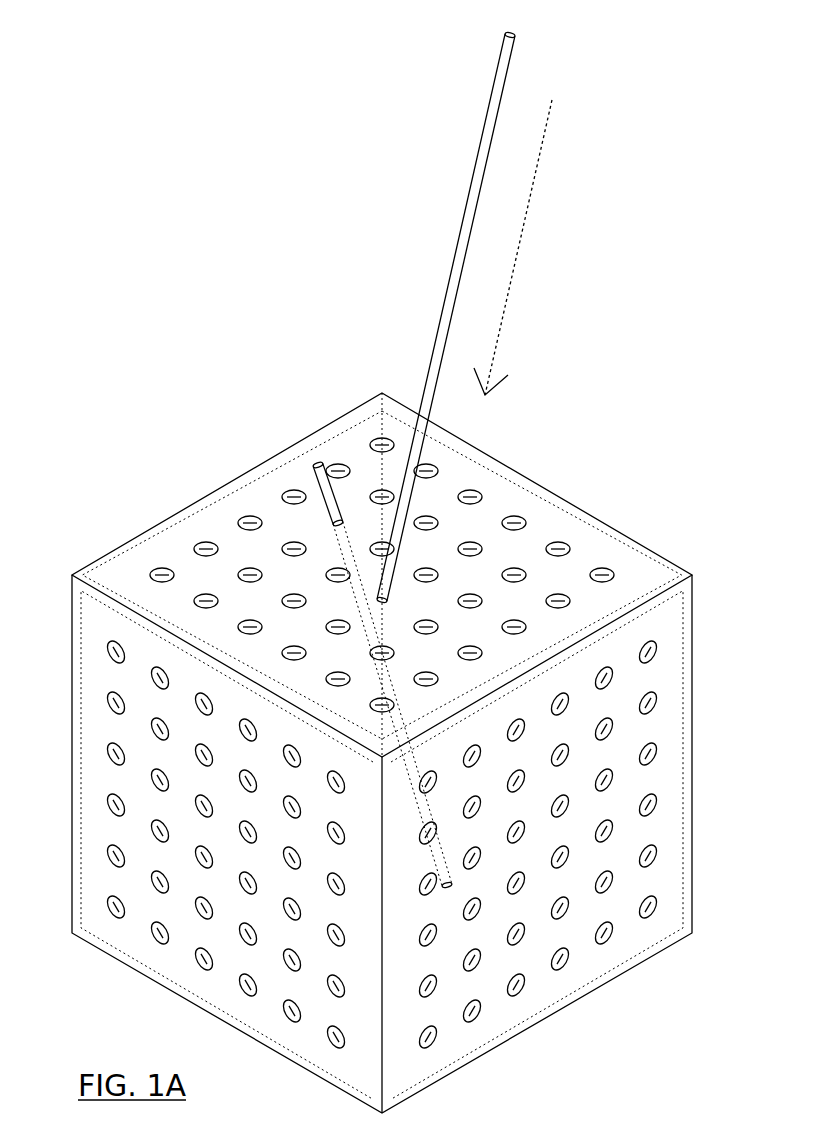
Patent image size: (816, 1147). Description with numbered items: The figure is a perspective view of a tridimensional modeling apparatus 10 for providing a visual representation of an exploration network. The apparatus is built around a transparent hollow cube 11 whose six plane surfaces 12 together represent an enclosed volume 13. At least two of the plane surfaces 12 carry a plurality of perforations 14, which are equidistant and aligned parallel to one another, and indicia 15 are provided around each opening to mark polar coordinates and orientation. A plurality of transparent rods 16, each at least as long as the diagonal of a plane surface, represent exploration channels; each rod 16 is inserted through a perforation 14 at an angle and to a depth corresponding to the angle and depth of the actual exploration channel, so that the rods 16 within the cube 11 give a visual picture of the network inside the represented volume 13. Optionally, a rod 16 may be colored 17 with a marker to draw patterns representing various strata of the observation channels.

The tridimensional modeling apparatus 10 is at (149, 446).
The transparent hollow cube 11 is at (694, 934).
The plane surfaces 12 is at (363, 820).
The enclosed volume 13 is at (447, 898).
The perforations 14 is at (560, 546).
The indicia 15 is at (148, 944).
The transparent rods 16 is at (442, 333).
The coloring 17 is at (382, 675).